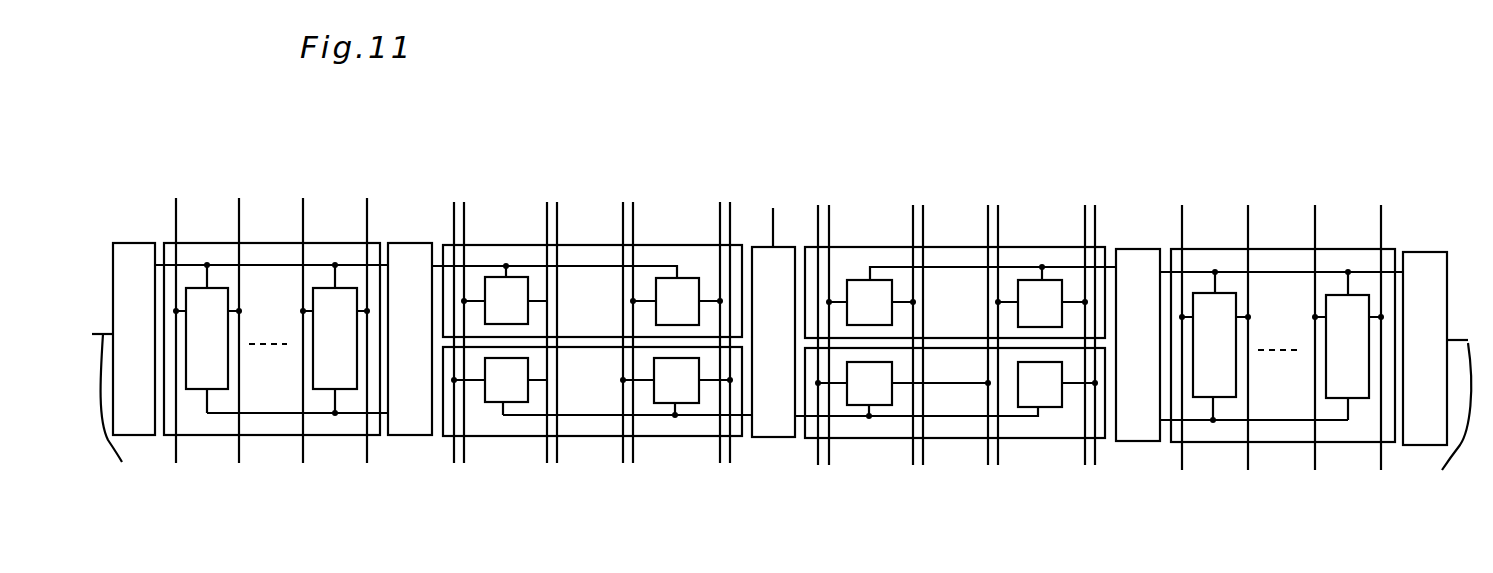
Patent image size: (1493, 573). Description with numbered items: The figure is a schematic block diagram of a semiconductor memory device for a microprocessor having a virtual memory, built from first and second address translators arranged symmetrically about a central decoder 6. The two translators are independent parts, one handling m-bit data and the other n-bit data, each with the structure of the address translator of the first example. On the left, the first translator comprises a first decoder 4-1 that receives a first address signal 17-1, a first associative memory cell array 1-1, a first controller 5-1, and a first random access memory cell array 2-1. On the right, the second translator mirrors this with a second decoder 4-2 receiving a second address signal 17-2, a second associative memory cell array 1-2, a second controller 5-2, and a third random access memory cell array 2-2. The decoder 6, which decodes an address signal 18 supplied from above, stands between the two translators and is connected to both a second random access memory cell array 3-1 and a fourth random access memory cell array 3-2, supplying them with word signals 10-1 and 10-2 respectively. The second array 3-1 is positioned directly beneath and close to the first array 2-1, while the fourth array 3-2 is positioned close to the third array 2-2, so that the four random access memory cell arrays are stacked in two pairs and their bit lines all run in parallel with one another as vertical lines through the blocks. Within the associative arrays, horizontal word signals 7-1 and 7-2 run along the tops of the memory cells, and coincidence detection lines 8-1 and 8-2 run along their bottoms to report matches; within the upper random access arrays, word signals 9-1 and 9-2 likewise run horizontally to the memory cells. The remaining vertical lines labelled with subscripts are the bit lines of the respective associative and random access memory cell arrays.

The first associative memory cell array 1-1 is at (258, 243).
The second associative memory cell array 1-2 is at (1268, 249).
The first random access memory cell array 2-1 is at (577, 245).
The third random access memory cell array 2-2 is at (941, 247).
The second random access memory cell array 3-1 is at (572, 438).
The fourth random access memory cell array 3-2 is at (940, 440).
The first decoder 4-1 is at (120, 243).
The second decoder 4-2 is at (1422, 252).
The first controller 5-1 is at (400, 243).
The second controller 5-2 is at (1125, 249).
The decoder 6 is at (765, 440).
The word signal 7-1 is at (248, 268).
The word signal 7-2 is at (1262, 275).
The coincidence detection line 8-1 is at (262, 405).
The coincidence detection line 8-2 is at (1272, 415).
The word signal 9-1 is at (612, 301).
The word signal 9-2 is at (972, 303).
The word signal 10-1 is at (612, 380).
The word signal 10-2 is at (977, 383).
The first address signal 17-1 is at (141, 415).
The second address signal 17-2 is at (1433, 425).
The address signal 18 is at (797, 212).